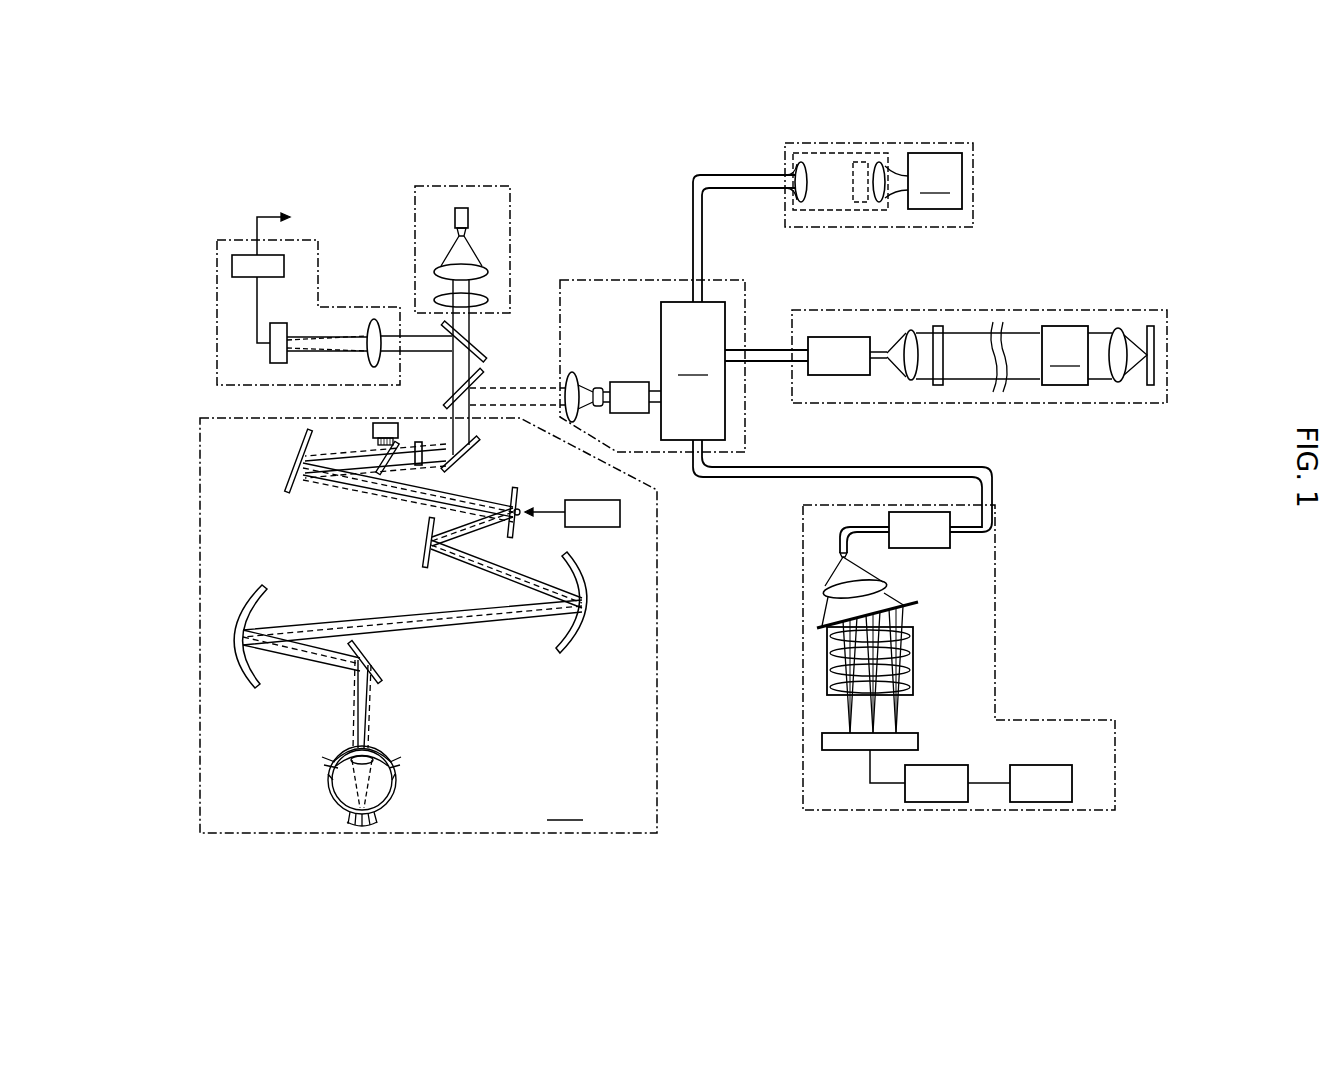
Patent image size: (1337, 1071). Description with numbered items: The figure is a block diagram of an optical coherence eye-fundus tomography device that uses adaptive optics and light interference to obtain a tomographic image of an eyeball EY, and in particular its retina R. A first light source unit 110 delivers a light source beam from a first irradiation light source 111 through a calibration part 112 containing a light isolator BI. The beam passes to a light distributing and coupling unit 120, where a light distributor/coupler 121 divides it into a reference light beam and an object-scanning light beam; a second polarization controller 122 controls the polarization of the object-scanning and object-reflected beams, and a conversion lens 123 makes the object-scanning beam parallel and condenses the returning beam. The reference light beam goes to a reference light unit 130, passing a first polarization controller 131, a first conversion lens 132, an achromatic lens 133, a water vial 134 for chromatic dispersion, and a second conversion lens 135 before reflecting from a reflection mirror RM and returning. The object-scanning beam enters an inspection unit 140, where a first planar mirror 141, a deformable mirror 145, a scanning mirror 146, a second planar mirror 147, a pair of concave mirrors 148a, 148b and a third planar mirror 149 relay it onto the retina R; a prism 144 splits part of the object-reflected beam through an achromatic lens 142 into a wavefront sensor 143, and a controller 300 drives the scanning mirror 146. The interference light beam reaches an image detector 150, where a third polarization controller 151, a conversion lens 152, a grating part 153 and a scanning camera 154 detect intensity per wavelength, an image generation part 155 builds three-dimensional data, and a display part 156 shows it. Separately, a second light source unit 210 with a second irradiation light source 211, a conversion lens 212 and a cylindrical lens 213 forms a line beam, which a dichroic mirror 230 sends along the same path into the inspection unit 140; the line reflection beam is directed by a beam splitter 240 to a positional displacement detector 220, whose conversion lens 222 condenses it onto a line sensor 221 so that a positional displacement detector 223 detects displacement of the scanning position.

The first light source unit 110 is at (973, 152).
The first irradiation light source 111 is at (935, 181).
The calibration part 112 is at (820, 163).
The light isolator BI is at (862, 162).
The light distributing and coupling unit 120 is at (636, 280).
The light distributor/coupler 121 is at (693, 371).
The second polarization controller 122 is at (628, 382).
The conversion lens for the light distributing and coupling unit 123 is at (578, 375).
The reference light unit 130 is at (884, 310).
The first polarization controller 131 is at (835, 375).
The first conversion lens 132 is at (911, 380).
The achromatic lens 133 is at (938, 385).
The water vial 134 is at (1065, 355).
The second conversion lens 135 is at (1118, 382).
The reflection mirror RM is at (1150, 385).
The inspection unit 140 is at (428, 625).
The first planar mirror 141 is at (475, 460).
The achromatic lens 142 is at (418, 442).
The wavefront sensor 143 is at (378, 420).
The prism for the sensor 144 is at (382, 472).
The deformable mirror 145 is at (288, 458).
The scanning mirror 146 is at (518, 490).
The second planar mirror 147 is at (425, 555).
The concave mirror 148a is at (565, 655).
The concave mirror 148b is at (243, 688).
The third planar mirror 149 is at (382, 672).
The eyeball EY is at (393, 760).
The retina R is at (382, 802).
The image detector 150 is at (995, 620).
The third polarization controller 151 is at (935, 548).
The conversion lens for the image detector 152 is at (886, 586).
The grating part 153 is at (924, 597).
The scanning camera 154 is at (918, 742).
The image generation part 155 is at (952, 765).
The display part 156 is at (1050, 765).
The second light source unit 210 is at (462, 186).
The second irradiation light source 211 is at (468, 218).
The conversion lens for the second light source unit 212 is at (485, 268).
The cylindrical lens 213 is at (485, 296).
The positional displacement detector 220 is at (228, 240).
The line sensor 221 is at (270, 352).
The conversion lens for the positional displacement detector 222 is at (372, 319).
The positional displacement detector 223 is at (232, 263).
The dichroic mirror 230 is at (482, 380).
The beam splitter 240 is at (483, 350).
The controller 300 is at (344, 220).